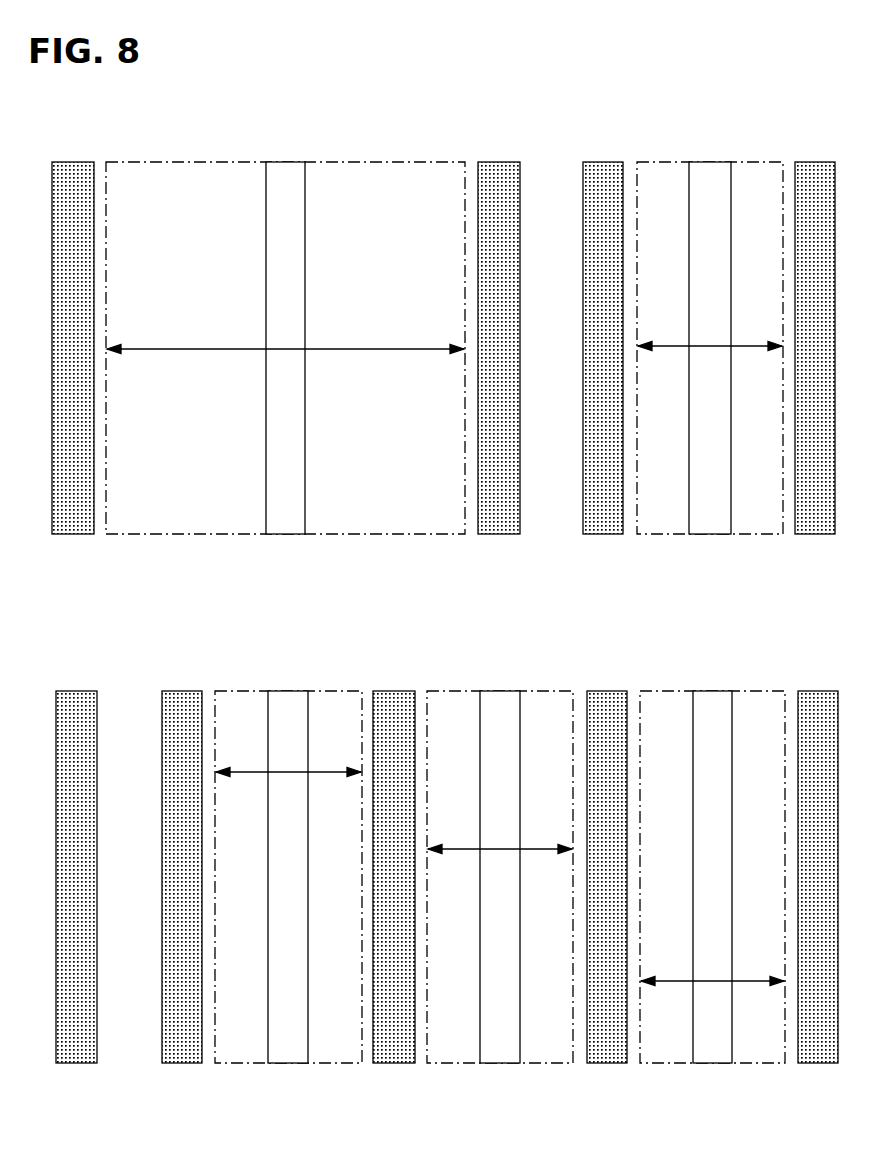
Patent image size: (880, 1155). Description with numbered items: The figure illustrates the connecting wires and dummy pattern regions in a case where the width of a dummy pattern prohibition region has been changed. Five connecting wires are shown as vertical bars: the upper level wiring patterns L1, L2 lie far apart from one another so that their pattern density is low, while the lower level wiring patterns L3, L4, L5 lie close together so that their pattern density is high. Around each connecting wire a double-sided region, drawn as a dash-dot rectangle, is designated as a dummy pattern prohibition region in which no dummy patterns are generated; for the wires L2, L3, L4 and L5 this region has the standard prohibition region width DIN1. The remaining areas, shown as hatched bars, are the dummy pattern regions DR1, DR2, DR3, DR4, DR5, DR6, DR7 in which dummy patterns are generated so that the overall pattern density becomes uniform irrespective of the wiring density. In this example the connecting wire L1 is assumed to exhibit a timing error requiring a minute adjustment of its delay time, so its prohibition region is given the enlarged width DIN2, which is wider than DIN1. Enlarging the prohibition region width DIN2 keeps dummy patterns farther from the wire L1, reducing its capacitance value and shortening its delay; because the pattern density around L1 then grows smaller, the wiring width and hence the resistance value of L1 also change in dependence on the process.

The connecting wire L1 is at (287, 165).
The connecting wire L2 is at (711, 165).
The connecting wire L3 is at (289, 695).
The connecting wire L4 is at (501, 695).
The connecting wire L5 is at (714, 695).
The dummy pattern prohibition region width DIN1 is at (710, 347).
The dummy pattern prohibition region width DIN2 is at (285, 350).
The dummy pattern region DR1 is at (108, 562).
The dummy pattern region DR2 is at (627, 558).
The dummy pattern region DR3 is at (848, 558).
The dummy pattern region DR4 is at (215, 1091).
The dummy pattern region DR5 is at (428, 1091).
The dummy pattern region DR6 is at (642, 1088).
The dummy pattern region DR7 is at (853, 1088).